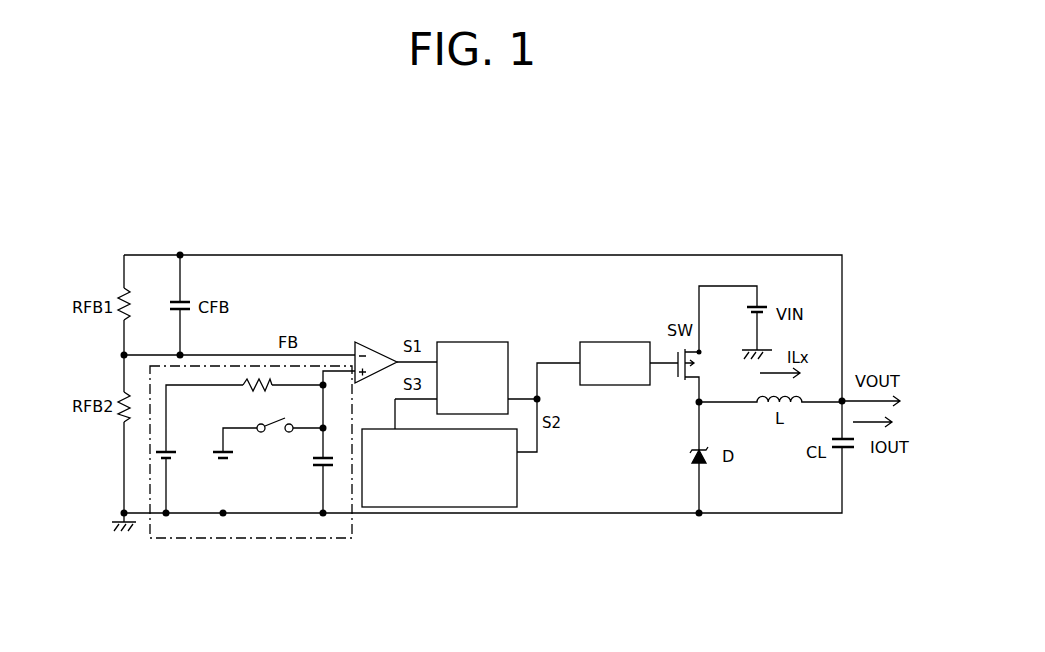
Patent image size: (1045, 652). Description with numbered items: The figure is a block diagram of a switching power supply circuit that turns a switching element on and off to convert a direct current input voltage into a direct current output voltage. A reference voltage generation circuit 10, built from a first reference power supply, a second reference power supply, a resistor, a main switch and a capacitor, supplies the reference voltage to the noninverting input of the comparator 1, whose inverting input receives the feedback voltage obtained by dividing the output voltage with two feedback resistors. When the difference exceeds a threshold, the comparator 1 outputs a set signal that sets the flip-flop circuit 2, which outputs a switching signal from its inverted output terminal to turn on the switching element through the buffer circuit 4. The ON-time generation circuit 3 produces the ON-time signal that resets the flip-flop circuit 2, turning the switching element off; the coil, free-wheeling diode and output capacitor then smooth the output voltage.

The comparator 1 is at (388, 346).
The flip-flop circuit 2 is at (463, 342).
The ON-time generation circuit 3 is at (450, 507).
The buffer circuit 4 is at (600, 342).
The reference voltage generation circuit 10 is at (283, 540).